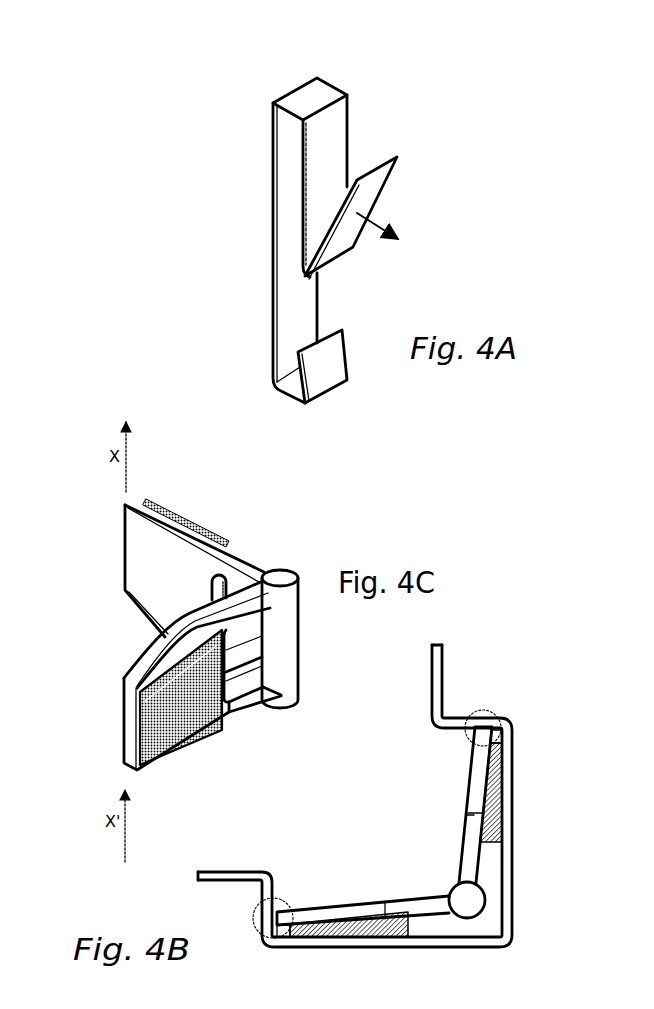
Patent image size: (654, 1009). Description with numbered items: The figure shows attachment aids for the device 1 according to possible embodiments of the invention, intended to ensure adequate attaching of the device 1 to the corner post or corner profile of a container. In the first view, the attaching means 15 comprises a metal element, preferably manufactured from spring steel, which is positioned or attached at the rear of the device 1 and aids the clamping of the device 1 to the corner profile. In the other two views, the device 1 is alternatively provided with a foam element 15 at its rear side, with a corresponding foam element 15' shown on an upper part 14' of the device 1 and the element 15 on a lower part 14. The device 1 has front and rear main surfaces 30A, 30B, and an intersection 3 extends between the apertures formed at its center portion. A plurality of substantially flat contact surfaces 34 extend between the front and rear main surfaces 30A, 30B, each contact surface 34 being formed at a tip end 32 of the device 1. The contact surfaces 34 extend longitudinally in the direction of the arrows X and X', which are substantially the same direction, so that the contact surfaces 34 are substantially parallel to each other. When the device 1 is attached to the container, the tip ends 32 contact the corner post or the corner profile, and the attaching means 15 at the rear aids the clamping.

In FIG. 4C, the device 1 is at (133, 552).
In FIG. 4B, the device 1 is at (470, 783).
In FIG. 4C, the intersection 3 is at (295, 638).
In FIG. 4B, the intersection 3 is at (460, 896).
In FIG. 4C, the lower plate 14 is at (161, 706).
In FIG. 4C, the upper plate 14' is at (97, 609).
In FIG. 4A, the attaching means 15 is at (377, 240).
In FIG. 4C, the attaching means 15 is at (196, 711).
In FIG. 4B, the attaching means 15 is at (349, 956).
In FIG. 4C, the resilient pad 15' is at (186, 507).
In FIG. 4B, the resilient pad 15' is at (535, 792).
In FIG. 4C, the front main surface 30A is at (185, 597).
In FIG. 4B, the front main surface 30A is at (465, 828).
In FIG. 4C, the rear main surface 30B is at (237, 705).
In FIG. 4B, the rear main surface 30B is at (430, 913).
In FIG. 4C, the tip end 32 is at (125, 523).
In FIG. 4B, the tip end 32 is at (283, 899).
In FIG. 4C, the contact surface 34 is at (128, 717).
In FIG. 4B, the contact surface 34 is at (277, 922).